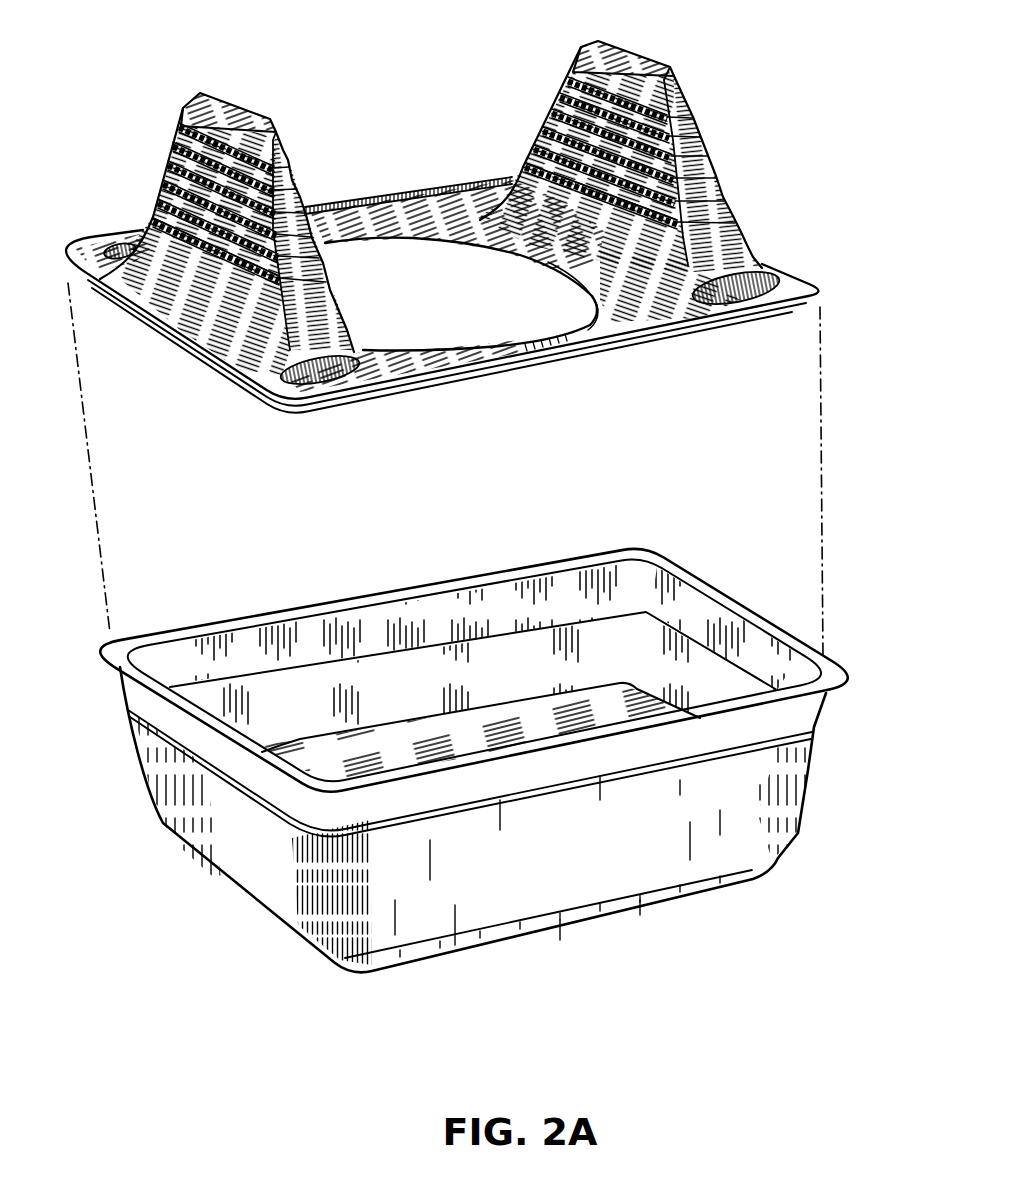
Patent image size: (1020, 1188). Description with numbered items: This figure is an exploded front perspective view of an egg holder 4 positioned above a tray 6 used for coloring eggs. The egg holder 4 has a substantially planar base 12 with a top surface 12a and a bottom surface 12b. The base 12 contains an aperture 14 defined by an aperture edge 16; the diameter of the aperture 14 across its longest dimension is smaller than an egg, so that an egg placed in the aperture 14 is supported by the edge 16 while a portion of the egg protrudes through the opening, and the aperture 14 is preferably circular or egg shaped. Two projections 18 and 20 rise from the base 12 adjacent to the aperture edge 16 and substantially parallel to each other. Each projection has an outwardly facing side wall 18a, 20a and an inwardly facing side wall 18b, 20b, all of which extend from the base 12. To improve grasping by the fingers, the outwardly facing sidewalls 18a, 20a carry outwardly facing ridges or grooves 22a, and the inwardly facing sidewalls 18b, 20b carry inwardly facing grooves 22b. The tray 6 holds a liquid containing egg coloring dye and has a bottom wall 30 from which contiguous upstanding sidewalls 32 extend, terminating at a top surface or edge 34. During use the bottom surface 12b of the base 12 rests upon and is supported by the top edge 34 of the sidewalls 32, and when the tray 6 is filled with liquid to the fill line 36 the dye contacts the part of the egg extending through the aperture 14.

The egg holder 4 is at (724, 152).
The tray 6 is at (852, 677).
The base 12 is at (65, 250).
The top surface 12a is at (92, 266).
The bottom surface 12b is at (284, 406).
The aperture 14 is at (459, 302).
The aperture edge 16 is at (537, 262).
The projection 18 is at (190, 104).
The outwardly facing side wall 18a is at (163, 178).
The inwardly facing side wall 18b is at (304, 190).
The projection 20 is at (686, 80).
The outwardly facing side wall 20a is at (700, 108).
The inwardly facing side wall 20b is at (550, 117).
The outwardly facing ridges or grooves 22a is at (157, 207).
The inwardly facing grooves 22b is at (288, 152).
The bottom wall 30 is at (597, 692).
The sidewalls 32 is at (234, 847).
The top surface or edge 34 is at (694, 573).
The fill line 36 is at (549, 616).